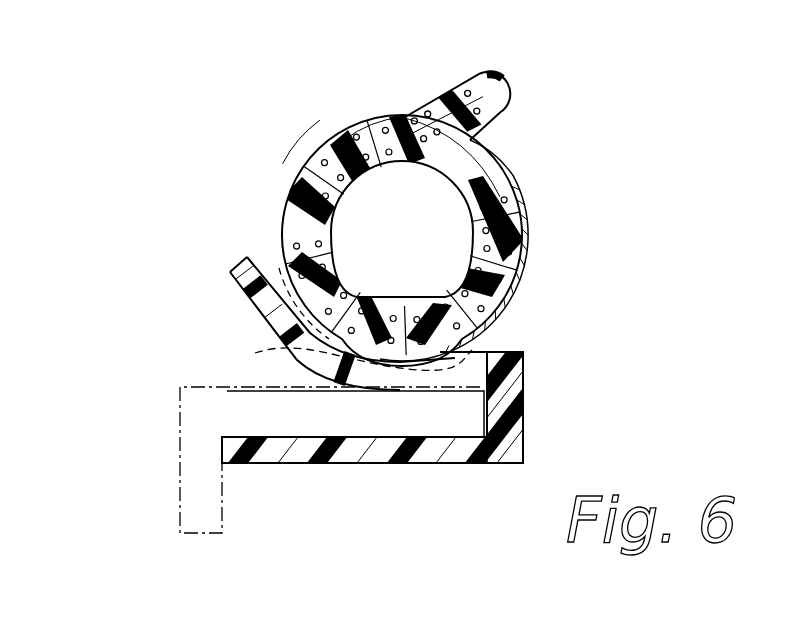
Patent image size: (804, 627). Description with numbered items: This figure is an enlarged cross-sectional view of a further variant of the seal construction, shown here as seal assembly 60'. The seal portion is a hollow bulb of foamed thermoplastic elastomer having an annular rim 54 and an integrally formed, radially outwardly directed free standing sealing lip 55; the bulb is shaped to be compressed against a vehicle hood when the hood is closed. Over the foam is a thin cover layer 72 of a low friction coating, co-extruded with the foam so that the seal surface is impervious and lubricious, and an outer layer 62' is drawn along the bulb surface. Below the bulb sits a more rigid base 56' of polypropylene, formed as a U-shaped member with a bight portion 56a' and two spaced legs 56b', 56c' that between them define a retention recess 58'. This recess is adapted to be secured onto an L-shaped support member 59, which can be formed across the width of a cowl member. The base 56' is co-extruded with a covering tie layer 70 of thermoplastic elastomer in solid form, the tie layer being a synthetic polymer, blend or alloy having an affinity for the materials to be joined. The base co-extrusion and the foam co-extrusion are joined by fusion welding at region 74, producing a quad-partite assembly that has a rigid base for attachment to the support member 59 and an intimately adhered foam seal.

The annular rim 54 is at (310, 152).
The sealing lip 55 is at (500, 87).
The base 56' is at (444, 411).
The bight portion 56a' is at (576, 407).
The leg 56b' is at (512, 319).
The leg 56c' is at (354, 488).
The retention recess 58' is at (363, 450).
The support member 59 is at (180, 433).
The seal assembly 60' is at (396, 226).
The outer skin layer 62' is at (496, 250).
The tie layer 70 is at (238, 281).
The cover layer 72 is at (373, 117).
The fusion welding region 74 is at (347, 319).